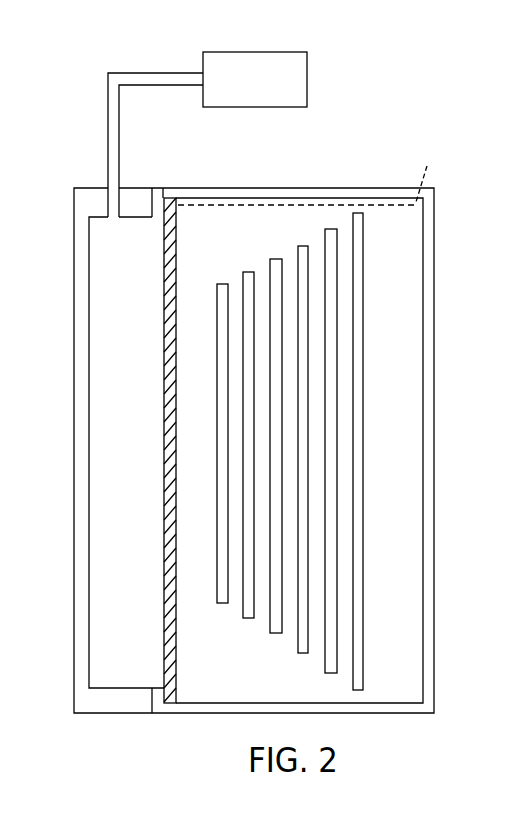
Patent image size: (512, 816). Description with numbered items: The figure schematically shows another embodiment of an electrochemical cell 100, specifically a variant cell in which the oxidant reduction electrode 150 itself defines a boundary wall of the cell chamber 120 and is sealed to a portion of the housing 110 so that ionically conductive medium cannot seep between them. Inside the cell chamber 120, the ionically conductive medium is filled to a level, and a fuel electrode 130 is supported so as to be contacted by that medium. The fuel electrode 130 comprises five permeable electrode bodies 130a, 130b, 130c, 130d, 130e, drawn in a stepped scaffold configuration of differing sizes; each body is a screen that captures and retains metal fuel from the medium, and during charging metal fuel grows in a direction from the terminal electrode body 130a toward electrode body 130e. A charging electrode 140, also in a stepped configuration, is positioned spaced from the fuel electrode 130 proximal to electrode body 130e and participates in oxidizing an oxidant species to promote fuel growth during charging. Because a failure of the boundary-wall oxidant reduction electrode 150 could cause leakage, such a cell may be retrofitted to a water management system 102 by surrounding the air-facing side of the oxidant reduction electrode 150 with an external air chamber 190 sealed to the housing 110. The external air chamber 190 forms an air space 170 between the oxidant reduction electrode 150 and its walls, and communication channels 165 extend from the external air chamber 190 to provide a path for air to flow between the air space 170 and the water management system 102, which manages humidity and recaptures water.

The electrochemical cell 100 is at (164, 149).
The water management system (WMS) 102 is at (292, 52).
The housing 110 is at (282, 193).
The cell chamber 120 is at (206, 685).
The fuel electrode 130 is at (362, 697).
The permeable electrode body 130a is at (358, 226).
The permeable electrode body 130b is at (332, 228).
The permeable electrode body 130c is at (302, 246).
The permeable electrode body 130d is at (275, 257).
The permeable electrode body 130e is at (249, 272).
The charging electrode 140 is at (222, 295).
The oxidant reduction electrode 150 is at (164, 262).
The communication channels 165 is at (110, 153).
The air space 170 is at (110, 380).
The external air chamber 190 is at (80, 423).